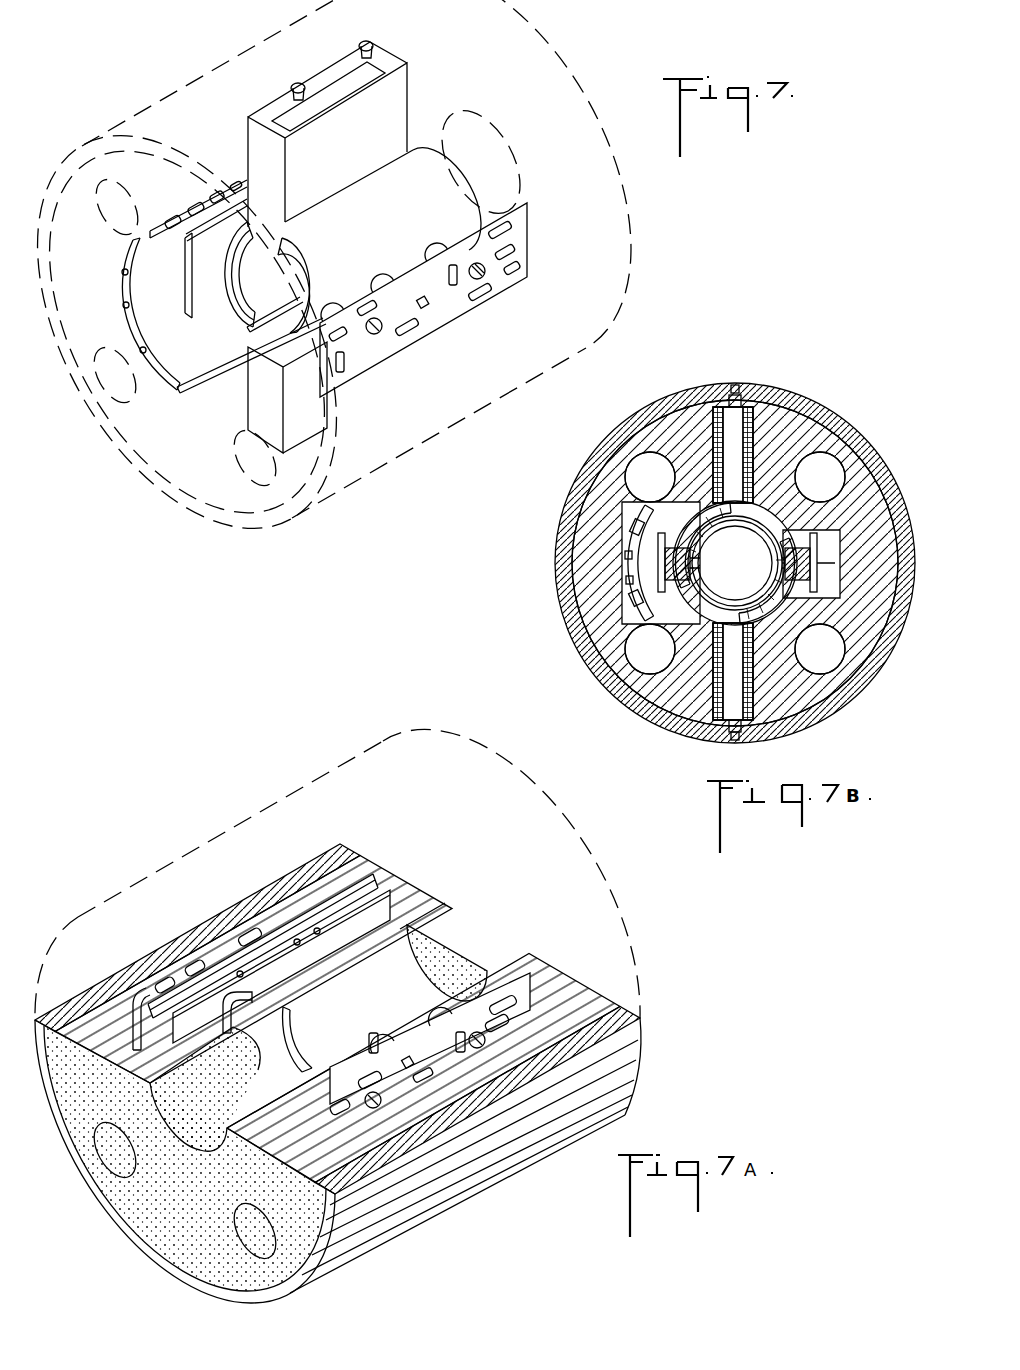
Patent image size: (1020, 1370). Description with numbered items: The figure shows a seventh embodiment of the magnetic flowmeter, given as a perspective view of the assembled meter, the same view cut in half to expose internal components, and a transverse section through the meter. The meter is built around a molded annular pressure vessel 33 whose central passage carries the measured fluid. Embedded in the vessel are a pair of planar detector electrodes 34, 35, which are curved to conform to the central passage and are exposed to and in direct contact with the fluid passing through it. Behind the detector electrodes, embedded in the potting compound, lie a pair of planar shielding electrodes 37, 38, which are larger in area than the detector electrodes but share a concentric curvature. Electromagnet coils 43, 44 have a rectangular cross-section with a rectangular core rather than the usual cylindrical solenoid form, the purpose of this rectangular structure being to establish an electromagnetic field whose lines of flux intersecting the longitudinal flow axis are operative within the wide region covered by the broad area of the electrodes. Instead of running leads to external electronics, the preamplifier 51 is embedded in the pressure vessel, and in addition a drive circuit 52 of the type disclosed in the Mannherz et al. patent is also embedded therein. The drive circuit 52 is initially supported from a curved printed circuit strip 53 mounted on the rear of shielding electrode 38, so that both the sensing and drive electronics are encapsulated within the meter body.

In FIG. 7B, the molded annular pressure vessel 33 is at (665, 722).
In FIG. 7A, the molded annular pressure vessel 33 is at (577, 1003).
In FIG. 7, the detector electrode 34 is at (303, 278).
In FIG. 7B, the detector electrode 34 is at (764, 545).
In FIG. 7A, the detector electrode 34 is at (265, 1060).
In FIG. 7, the detector electrode 35 is at (245, 322).
In FIG. 7B, the detector electrode 35 is at (707, 578).
In FIG. 7A, the detector electrode 35 is at (255, 1065).
In FIG. 7, the shielding electrode 37 is at (422, 185).
In FIG. 7B, the shielding electrode 37 is at (758, 516).
In FIG. 7A, the shielding electrode 37 is at (423, 947).
In FIG. 7, the shielding electrode 38 is at (247, 303).
In FIG. 7B, the shielding electrode 38 is at (712, 518).
In FIG. 7, the electromagnet coil 43 is at (397, 87).
In FIG. 7B, the electromagnet coil 43 is at (752, 418).
In FIG. 7, the electromagnet coil 44 is at (402, 365).
In FIG. 7B, the electromagnet coil 44 is at (753, 696).
In FIG. 7, the preamplifier 51 is at (520, 247).
In FIG. 7B, the preamplifier 51 is at (823, 541).
In FIG. 7A, the preamplifier 51 is at (527, 977).
In FIG. 7, the drive circuit 52 is at (177, 218).
In FIG. 7B, the drive circuit 52 is at (657, 607).
In FIG. 7A, the drive circuit 52 is at (373, 880).
In FIG. 7, the curved printed circuit strip 53 is at (133, 252).
In FIG. 7B, the curved printed circuit strip 53 is at (623, 567).
In FIG. 7A, the curved printed circuit strip 53 is at (249, 933).